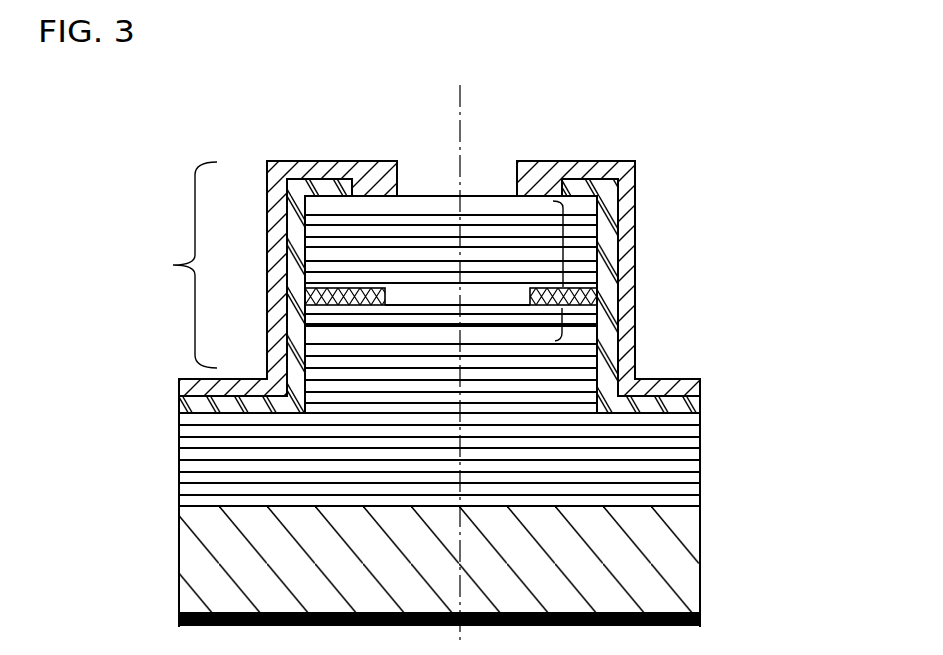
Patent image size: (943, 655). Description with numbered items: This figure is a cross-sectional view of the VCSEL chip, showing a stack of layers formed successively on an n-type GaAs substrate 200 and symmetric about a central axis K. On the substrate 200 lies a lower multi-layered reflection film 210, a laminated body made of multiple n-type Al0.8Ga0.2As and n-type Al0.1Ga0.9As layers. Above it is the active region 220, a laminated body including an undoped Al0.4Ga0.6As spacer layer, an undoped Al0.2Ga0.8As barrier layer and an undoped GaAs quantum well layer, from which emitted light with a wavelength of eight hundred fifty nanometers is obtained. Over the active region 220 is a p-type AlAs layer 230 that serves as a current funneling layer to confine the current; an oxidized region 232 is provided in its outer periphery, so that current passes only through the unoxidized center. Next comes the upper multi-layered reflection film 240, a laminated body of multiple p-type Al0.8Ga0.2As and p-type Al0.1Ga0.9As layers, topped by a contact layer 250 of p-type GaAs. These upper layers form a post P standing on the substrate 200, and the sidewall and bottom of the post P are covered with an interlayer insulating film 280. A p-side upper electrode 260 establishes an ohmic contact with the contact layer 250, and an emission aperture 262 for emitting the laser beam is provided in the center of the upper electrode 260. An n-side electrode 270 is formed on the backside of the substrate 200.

The n-type GaAs substrate 200 is at (700, 552).
The lower multi-layered reflection film 210 is at (720, 350).
The active region 220 is at (562, 321).
The p-type AlAs layer 230 is at (597, 290).
The oxidized region 232 is at (304, 298).
The upper multi-layered reflection film 240 is at (563, 243).
The contact layer 250 is at (600, 200).
The p-side upper electrode 260 is at (567, 162).
The emission aperture 262 is at (488, 195).
The n-side electrode 270 is at (700, 617).
The interlayer insulating film 280 is at (268, 168).
The post P is at (185, 265).
The central axis K is at (461, 349).